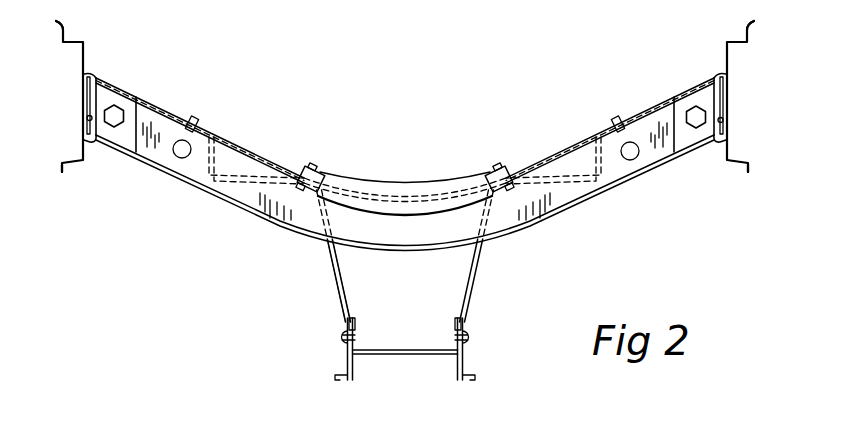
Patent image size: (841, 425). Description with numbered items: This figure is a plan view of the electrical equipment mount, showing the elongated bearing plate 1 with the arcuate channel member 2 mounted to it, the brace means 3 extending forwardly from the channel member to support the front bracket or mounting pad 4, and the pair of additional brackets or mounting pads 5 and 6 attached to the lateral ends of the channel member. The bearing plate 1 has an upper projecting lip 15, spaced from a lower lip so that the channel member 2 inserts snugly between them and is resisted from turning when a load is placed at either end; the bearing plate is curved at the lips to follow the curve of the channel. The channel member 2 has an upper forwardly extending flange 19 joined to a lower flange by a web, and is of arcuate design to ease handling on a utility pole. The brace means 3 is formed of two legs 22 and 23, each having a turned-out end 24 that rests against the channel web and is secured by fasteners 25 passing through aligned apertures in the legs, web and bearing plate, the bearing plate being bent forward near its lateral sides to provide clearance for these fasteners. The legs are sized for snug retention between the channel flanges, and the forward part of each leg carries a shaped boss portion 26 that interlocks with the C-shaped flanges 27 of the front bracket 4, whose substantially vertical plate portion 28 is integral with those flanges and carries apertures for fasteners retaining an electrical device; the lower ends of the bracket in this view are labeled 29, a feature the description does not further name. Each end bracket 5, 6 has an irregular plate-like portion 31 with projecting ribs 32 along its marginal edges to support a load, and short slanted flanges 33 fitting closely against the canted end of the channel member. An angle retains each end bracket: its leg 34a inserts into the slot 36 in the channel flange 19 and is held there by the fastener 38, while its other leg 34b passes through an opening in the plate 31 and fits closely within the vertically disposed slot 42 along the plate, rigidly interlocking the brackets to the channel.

The bearing plate 1 is at (368, 178).
The channel member 2 is at (549, 159).
The brace means 3 is at (305, 296).
The front bracket or mounting pad 4 is at (417, 364).
The additional bracket or mounting pad 5 is at (90, 40).
The additional bracket or mounting pad 6 is at (715, 56).
The upper projecting lip 15 is at (396, 200).
The upper flange 19 is at (238, 207).
The leg 22 is at (347, 316).
The leg 23 is at (477, 262).
The turned-out end 24 is at (318, 170).
The fastener 25 is at (306, 165).
The shaped boss portion 26 is at (342, 341).
The C-shaped flange 27 is at (452, 320).
The plate portion 28 is at (385, 350).
The foot 29 is at (337, 378).
The plate-like portion 31 is at (81, 62).
The projecting rib 32 is at (57, 22).
The short flange 33 is at (97, 77).
The leg 34a is at (128, 107).
The leg 34b is at (86, 100).
The slot 36 is at (168, 165).
The fastener 38 is at (115, 128).
The vertically disposed slot 42 is at (87, 117).